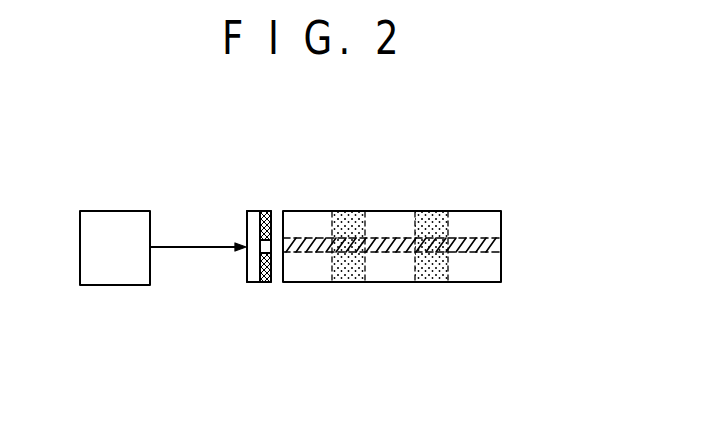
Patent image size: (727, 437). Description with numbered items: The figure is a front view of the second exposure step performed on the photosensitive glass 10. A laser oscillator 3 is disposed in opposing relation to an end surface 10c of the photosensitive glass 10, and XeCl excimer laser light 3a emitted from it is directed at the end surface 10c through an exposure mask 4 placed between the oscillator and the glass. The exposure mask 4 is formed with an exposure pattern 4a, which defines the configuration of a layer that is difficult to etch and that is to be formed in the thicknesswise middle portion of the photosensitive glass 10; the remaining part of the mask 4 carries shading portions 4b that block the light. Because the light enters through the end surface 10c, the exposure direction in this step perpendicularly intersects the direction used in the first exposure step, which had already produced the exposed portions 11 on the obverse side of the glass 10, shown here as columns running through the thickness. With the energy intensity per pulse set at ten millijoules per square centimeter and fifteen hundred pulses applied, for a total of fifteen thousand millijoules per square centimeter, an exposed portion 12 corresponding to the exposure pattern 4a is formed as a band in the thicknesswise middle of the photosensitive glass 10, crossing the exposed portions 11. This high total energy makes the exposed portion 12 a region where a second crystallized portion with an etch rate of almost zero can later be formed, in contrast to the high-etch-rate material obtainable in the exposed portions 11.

The laser oscillator 3 is at (116, 211).
The XeCl excimer laser light 3a is at (195, 247).
The exposure mask 4 is at (402, 111).
The exposure pattern 4a is at (281, 211).
The shading portions 4b is at (268, 211).
The photosensitive glass 10 is at (509, 204).
The end surface 10c is at (279, 284).
The exposed portions 11 is at (360, 284).
The exposed portion 12 is at (501, 245).